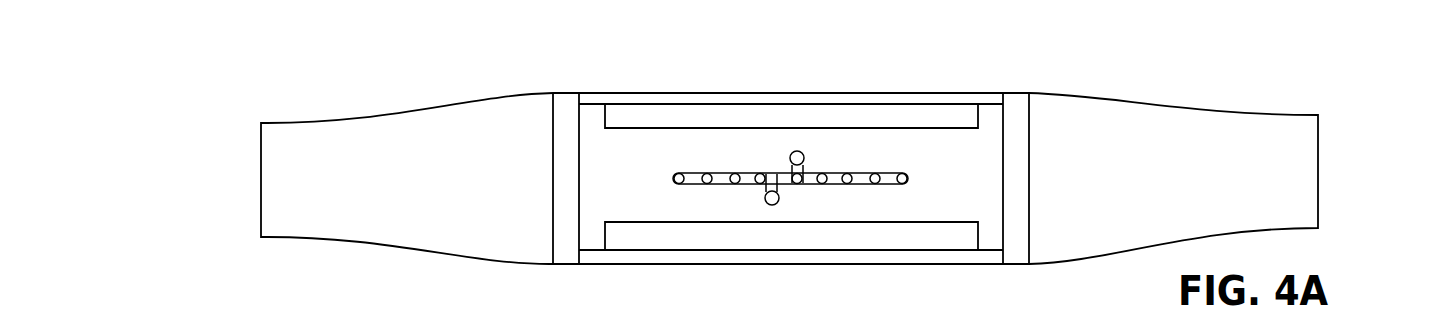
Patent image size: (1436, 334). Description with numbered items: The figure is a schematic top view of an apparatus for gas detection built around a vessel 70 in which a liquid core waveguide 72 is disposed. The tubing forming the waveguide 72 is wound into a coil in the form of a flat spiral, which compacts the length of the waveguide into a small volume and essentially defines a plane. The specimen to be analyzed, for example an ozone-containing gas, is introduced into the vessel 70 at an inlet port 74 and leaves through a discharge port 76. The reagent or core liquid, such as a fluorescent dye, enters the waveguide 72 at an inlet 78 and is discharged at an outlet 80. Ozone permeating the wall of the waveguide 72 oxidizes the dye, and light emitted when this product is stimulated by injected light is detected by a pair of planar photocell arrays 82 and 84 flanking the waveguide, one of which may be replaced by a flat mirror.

The vessel 70 is at (735, 93).
The liquid core waveguide 72 is at (672, 178).
The inlet port 74 is at (1333, 153).
The discharge port 76 is at (247, 179).
The inlet 78 is at (750, 200).
The outlet 80 is at (806, 160).
The planar photocell array 82 is at (952, 130).
The planar photocell array 84 is at (955, 222).